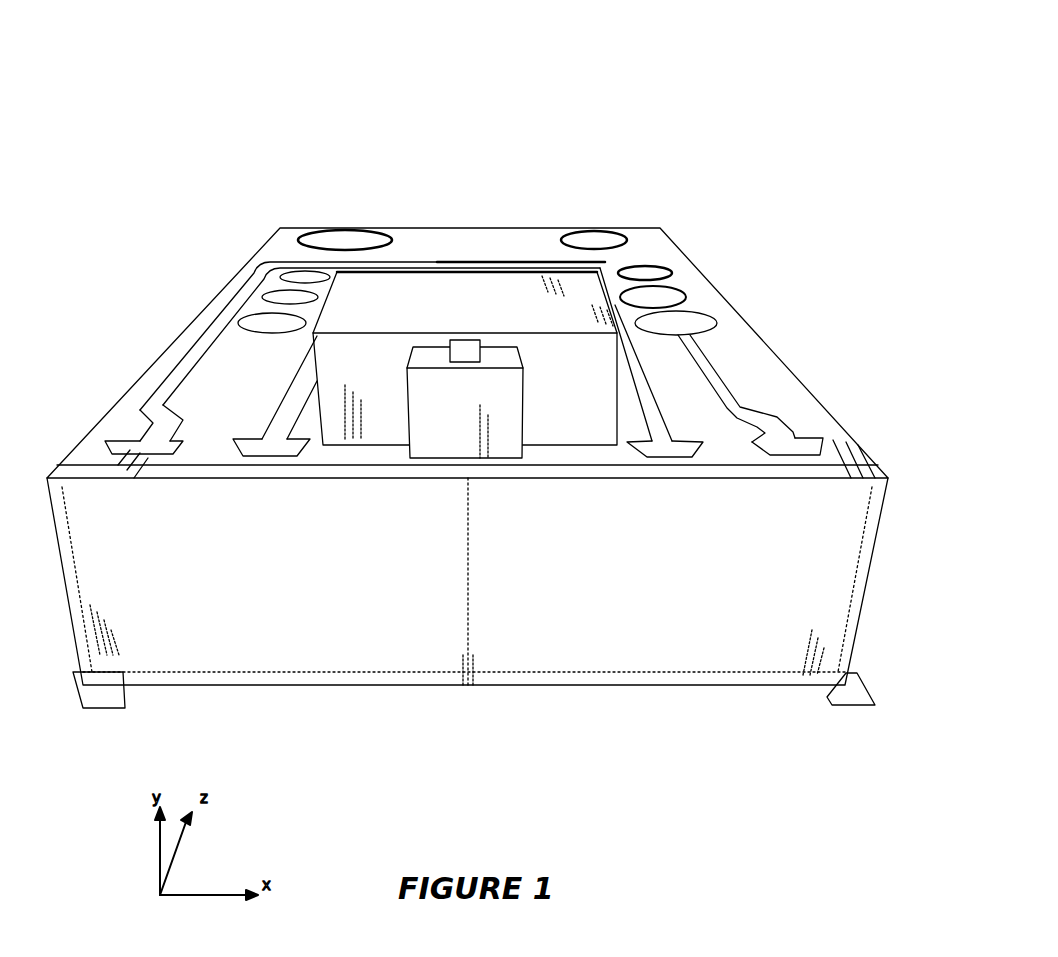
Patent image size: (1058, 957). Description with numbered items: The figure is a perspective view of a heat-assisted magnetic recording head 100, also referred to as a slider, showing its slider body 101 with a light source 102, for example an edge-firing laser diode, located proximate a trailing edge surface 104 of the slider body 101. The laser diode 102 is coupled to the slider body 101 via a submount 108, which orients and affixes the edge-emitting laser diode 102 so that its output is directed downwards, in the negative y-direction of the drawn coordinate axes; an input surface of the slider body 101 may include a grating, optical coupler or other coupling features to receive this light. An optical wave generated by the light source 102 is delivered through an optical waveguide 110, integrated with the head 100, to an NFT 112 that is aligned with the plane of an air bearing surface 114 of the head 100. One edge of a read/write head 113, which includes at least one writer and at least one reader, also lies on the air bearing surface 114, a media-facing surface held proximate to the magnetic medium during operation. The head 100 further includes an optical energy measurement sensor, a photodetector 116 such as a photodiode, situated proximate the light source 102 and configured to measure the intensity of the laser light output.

The HAMR head 100 is at (648, 100).
The slider body 101 is at (271, 248).
The light source 102 is at (523, 400).
The trailing edge surface 104 is at (103, 710).
The submount 108 is at (390, 285).
The optical waveguide 110 is at (468, 569).
The NFT 112 is at (465, 673).
The read/write head 113 is at (472, 673).
The air bearing surface 114 is at (832, 704).
The photodetector 116 is at (467, 340).